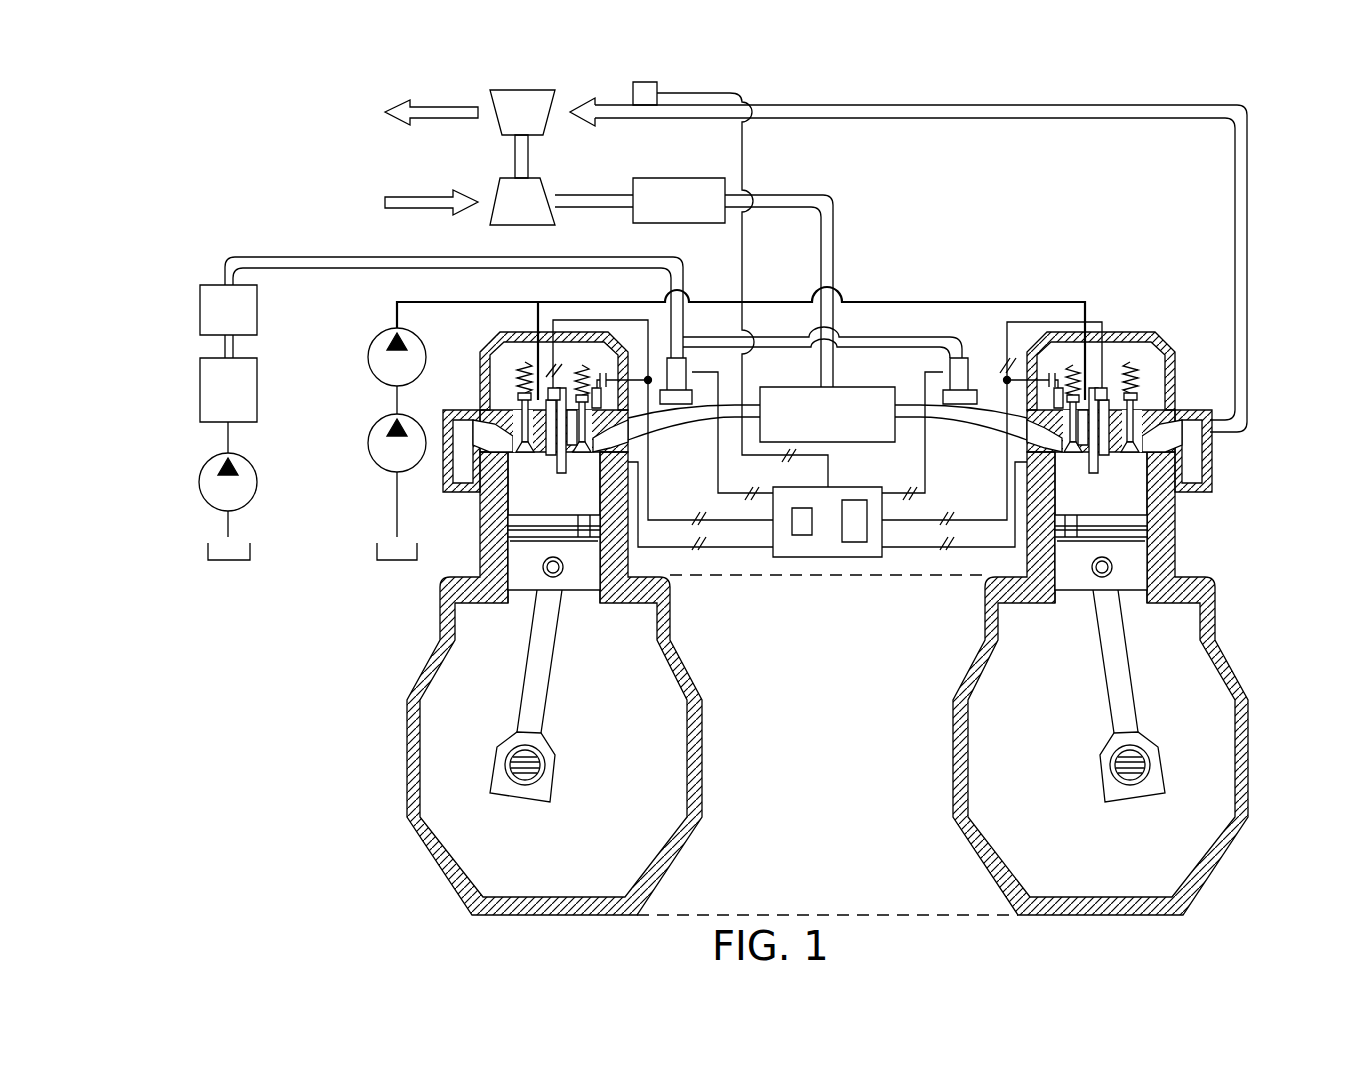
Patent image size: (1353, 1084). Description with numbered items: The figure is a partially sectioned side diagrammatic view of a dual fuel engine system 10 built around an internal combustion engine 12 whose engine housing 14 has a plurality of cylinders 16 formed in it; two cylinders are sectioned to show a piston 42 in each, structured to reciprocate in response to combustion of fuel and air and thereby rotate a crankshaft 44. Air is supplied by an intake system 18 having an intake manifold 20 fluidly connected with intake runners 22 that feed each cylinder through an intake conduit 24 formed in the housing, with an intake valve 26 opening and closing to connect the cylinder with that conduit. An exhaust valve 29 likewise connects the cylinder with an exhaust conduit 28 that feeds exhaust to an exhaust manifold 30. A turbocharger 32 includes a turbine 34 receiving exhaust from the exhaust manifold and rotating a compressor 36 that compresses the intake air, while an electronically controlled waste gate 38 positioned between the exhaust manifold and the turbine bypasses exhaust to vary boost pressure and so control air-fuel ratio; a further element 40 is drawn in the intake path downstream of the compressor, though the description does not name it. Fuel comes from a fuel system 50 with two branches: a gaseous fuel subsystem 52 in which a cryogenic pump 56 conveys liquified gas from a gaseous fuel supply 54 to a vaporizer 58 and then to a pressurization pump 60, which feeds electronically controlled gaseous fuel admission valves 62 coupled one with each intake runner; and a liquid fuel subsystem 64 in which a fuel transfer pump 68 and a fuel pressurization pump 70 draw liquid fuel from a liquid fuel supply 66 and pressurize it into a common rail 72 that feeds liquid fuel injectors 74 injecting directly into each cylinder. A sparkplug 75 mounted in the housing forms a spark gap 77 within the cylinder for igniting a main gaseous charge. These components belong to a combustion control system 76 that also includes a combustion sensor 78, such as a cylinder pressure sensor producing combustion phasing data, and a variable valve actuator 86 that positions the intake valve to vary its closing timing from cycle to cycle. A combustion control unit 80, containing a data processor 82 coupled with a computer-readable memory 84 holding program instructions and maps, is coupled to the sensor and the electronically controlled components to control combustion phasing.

The dual fuel engine system 10 is at (185, 163).
The internal combustion engine 12 is at (400, 660).
The engine housing 14 is at (408, 706).
The cylinder 16 is at (506, 492).
The intake system 18 is at (868, 228).
The intake manifold 20 is at (862, 387).
The intake runner 22 is at (700, 425).
The intake conduit 24 is at (672, 430).
The intake valve 26 is at (584, 455).
The exhaust conduit 28 is at (470, 410).
The exhaust valve 29 is at (518, 455).
The exhaust manifold 30 is at (474, 394).
The turbocharger 32 is at (508, 90).
The turbine 34 is at (522, 112).
The compressor 36 is at (522, 201).
The waste gate 38 is at (633, 92).
The charge air cooler 40 is at (685, 178).
The piston 42 is at (525, 578).
The crankshaft 44 is at (548, 770).
The fuel system 50 is at (260, 598).
The gaseous fuel subsystem 52 is at (204, 444).
The gaseous fuel supply 54 is at (250, 552).
The cryogenic pump 56 is at (257, 480).
The vaporizer 58 is at (257, 385).
The pressurization pump 60 is at (257, 307).
The gaseous fuel admission valve 62 is at (686, 362).
The liquid fuel subsystem 64 is at (374, 478).
The liquid fuel supply 66 is at (417, 550).
The fuel transfer pump 68 is at (366, 440).
The fuel pressurization pump 70 is at (366, 352).
The common rail 72 is at (962, 300).
The liquid fuel injector 74 is at (546, 440).
The sparkplug 75 is at (567, 392).
The combustion control system 76 is at (892, 553).
The spark gap 77 is at (560, 466).
The combustion sensor 78 is at (616, 470).
The combustion control unit 80 is at (833, 558).
The data processor 82 is at (802, 508).
The computer-readable memory 84 is at (855, 500).
The variable valve actuator 86 is at (614, 362).